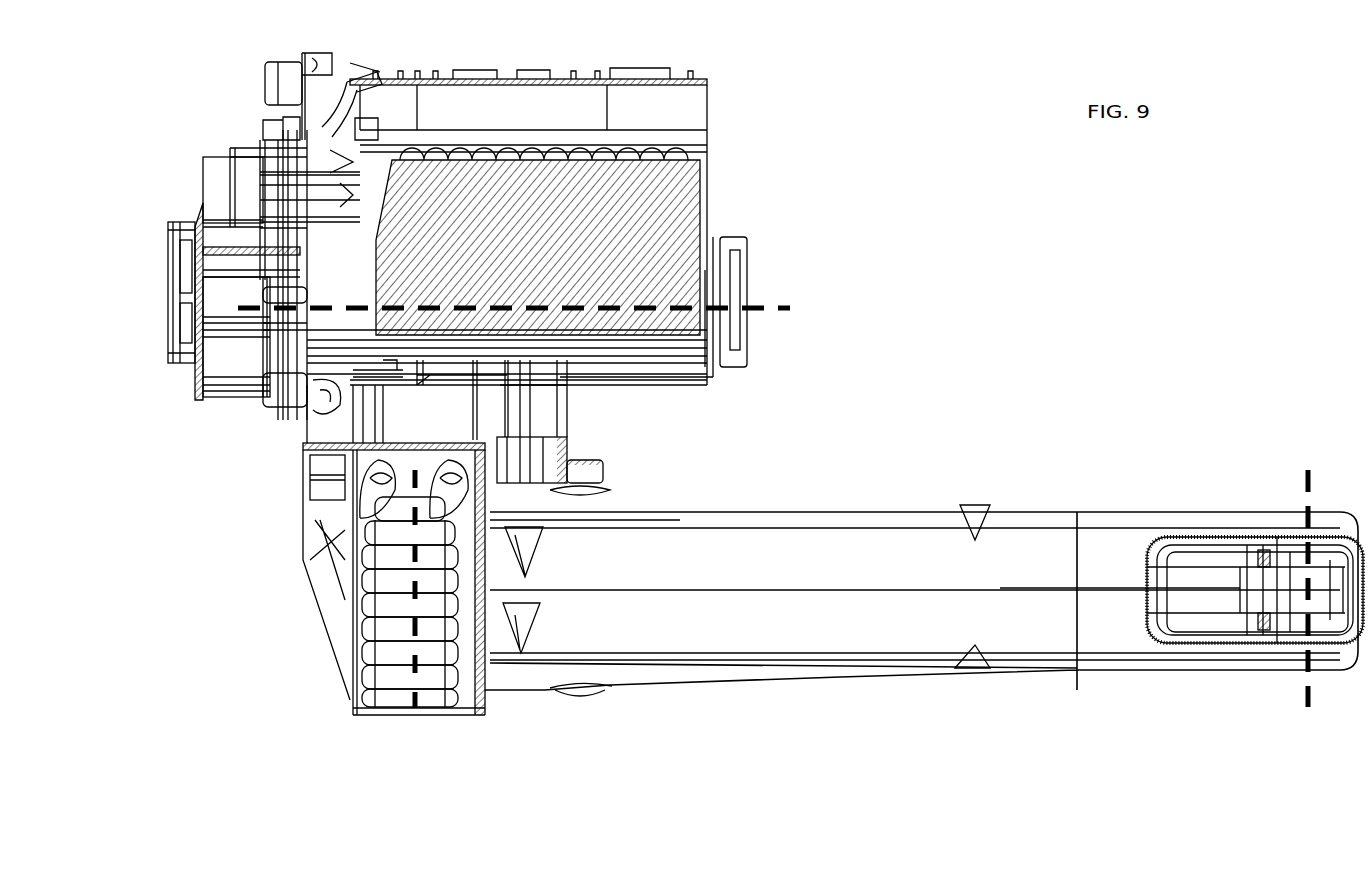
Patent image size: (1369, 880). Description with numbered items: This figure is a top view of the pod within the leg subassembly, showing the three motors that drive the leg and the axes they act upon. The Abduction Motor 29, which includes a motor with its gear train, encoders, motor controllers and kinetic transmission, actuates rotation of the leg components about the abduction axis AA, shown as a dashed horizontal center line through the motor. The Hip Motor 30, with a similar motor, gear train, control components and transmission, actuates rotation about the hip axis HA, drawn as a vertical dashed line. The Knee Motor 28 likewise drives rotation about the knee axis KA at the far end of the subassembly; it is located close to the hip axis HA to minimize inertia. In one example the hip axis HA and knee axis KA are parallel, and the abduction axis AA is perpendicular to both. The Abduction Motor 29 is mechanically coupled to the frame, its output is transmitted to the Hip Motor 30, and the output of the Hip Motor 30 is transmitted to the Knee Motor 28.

The Knee Motor 28 is at (460, 545).
The Abduction Motor 29 is at (252, 264).
The Hip Motor 30 is at (616, 240).
The abduction axis AA is at (794, 307).
The hip axis HA is at (426, 487).
The knee axis KA is at (1297, 473).